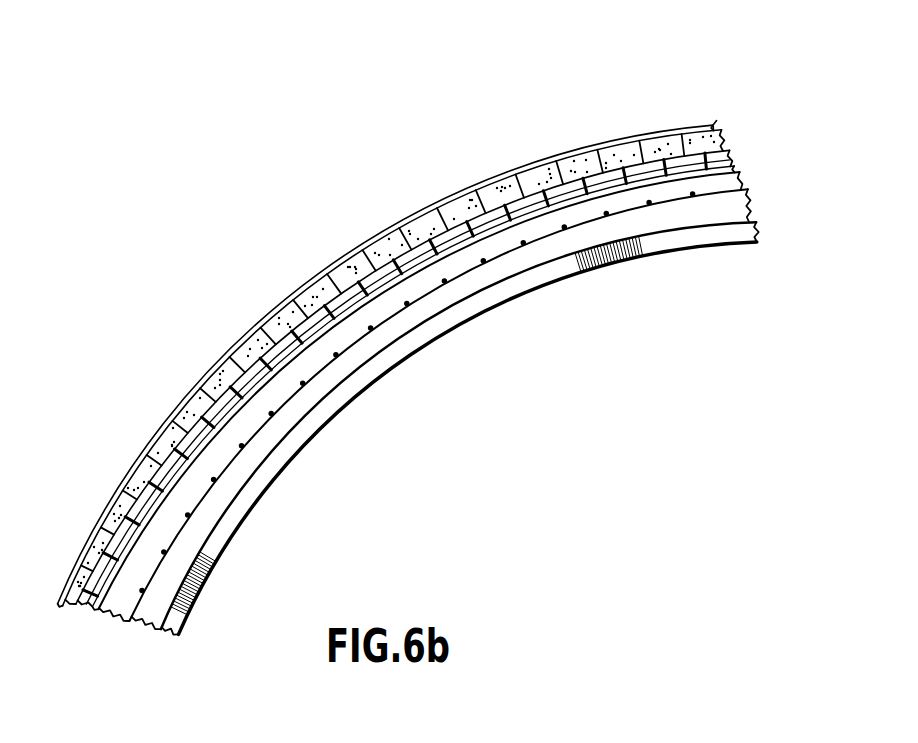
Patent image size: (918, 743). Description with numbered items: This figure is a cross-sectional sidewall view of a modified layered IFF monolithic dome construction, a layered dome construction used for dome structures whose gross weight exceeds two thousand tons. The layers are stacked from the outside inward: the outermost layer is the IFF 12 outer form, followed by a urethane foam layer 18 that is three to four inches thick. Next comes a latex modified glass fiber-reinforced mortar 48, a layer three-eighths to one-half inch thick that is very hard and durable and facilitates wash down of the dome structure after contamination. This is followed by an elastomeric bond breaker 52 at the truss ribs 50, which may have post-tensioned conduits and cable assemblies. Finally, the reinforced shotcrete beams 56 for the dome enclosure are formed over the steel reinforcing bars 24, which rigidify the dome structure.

The IFF outer form 12 is at (560, 148).
The urethane foam layer 18 is at (427, 225).
The latex modified glass fiber-reinforced mortar 48 is at (352, 252).
The elastomeric bond breaker 52 is at (280, 367).
The reinforced shotcrete beams 56 is at (227, 453).
The steel reinforcing bars 24 is at (250, 440).
The truss ribs 50 is at (247, 503).